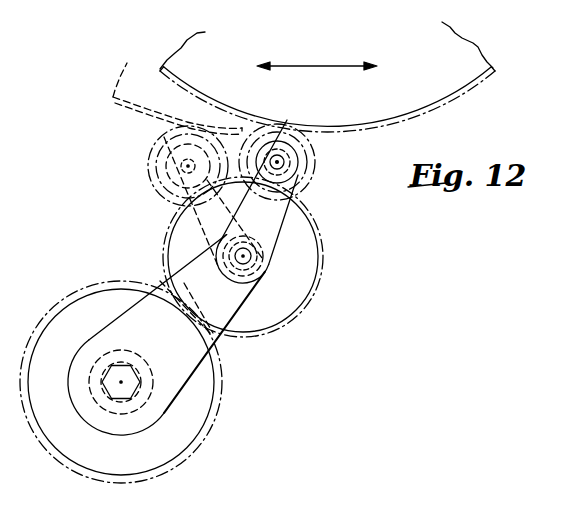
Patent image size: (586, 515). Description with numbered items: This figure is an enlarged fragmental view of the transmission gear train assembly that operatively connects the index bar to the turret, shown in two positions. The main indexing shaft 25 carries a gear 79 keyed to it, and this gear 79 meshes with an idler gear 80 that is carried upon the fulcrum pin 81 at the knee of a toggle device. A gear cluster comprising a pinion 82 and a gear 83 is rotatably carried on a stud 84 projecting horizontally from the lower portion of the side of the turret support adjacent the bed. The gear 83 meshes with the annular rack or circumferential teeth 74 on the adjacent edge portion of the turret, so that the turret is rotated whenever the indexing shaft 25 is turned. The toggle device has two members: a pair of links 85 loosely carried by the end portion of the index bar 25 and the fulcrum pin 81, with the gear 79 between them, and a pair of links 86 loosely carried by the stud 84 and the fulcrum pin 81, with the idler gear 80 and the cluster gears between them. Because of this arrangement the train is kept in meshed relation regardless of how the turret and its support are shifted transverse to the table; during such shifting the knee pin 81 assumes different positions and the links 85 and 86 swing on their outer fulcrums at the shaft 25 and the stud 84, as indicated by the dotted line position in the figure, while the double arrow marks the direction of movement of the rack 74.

The main indexing shaft 25 is at (136, 404).
The annular rack or circumferential teeth 74 is at (118, 106).
The gear 79 is at (206, 431).
The idler gear 80 is at (323, 263).
The fulcrum pin 81 is at (249, 259).
The pinion 82 is at (305, 186).
The gear 83 is at (315, 163).
The stud 84 is at (277, 162).
The links 85 is at (180, 378).
The links 86 is at (280, 217).